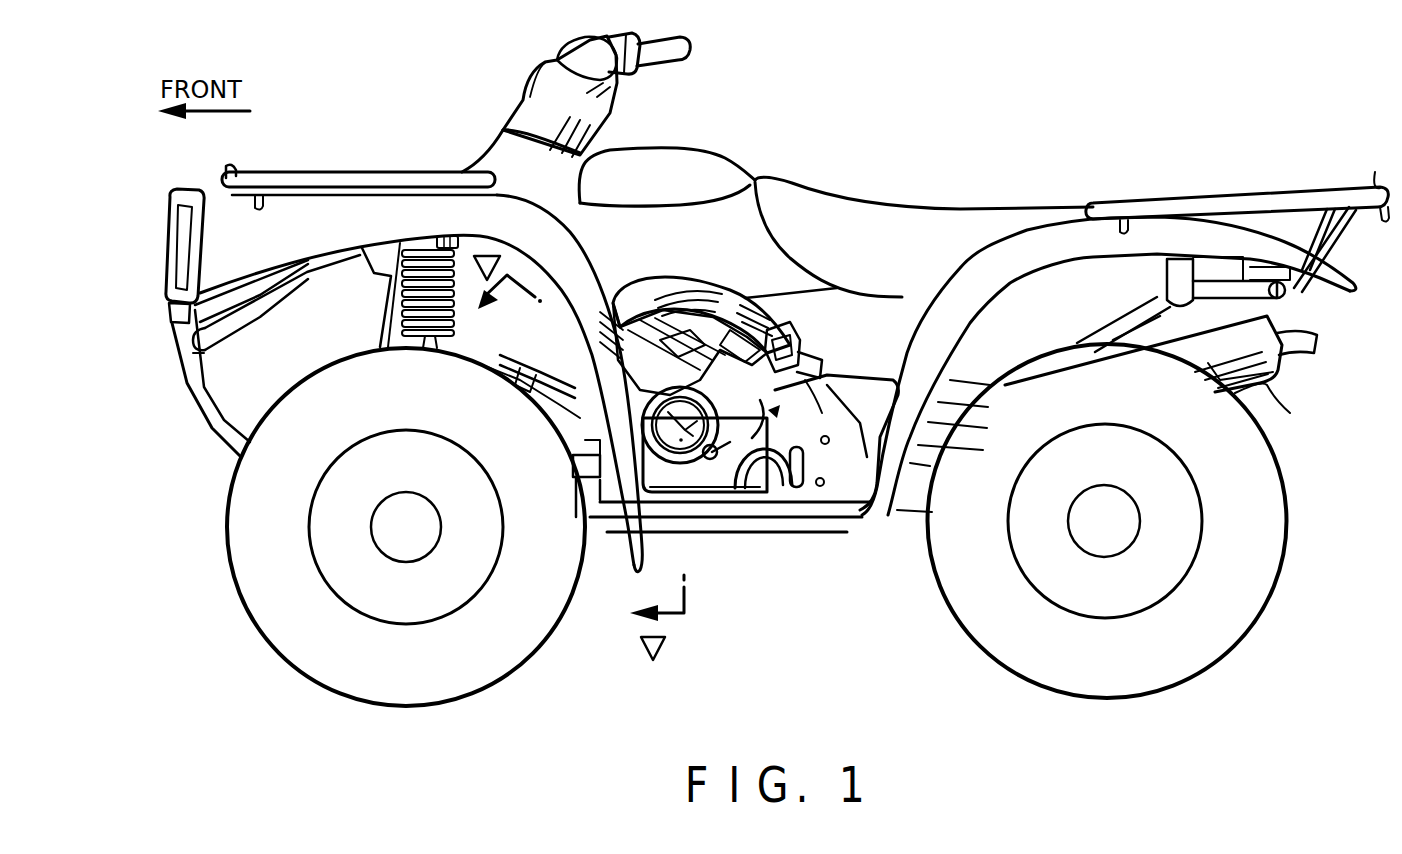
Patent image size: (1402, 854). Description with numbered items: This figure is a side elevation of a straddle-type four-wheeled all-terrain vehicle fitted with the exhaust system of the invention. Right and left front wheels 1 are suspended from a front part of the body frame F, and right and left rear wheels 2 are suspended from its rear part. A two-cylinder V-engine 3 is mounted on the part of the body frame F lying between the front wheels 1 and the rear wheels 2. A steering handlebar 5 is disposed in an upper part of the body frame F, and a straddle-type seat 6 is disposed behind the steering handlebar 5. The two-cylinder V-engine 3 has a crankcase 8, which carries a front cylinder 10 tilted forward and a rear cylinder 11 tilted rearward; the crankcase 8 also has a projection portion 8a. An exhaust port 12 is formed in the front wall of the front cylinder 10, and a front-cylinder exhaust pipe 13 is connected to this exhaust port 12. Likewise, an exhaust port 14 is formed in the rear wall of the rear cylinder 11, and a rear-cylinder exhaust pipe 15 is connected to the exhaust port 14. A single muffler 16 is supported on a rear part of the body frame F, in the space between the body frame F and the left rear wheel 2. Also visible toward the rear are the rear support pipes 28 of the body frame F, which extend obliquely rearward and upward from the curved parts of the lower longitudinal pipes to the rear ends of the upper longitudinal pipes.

The front wheels 1 is at (267, 611).
The rear wheels 2 is at (1237, 613).
The two-cylinder V-engine 3 is at (813, 440).
The steering handlebar 5 is at (597, 110).
The straddle-type seat 6 is at (937, 198).
The crankcase 8 is at (637, 412).
The projection portion 8a is at (705, 440).
The front cylinder 10 is at (615, 327).
The rear cylinder 11 is at (747, 440).
The exhaust port 12 is at (553, 363).
The front-cylinder exhaust pipe 13 is at (682, 293).
The exhaust port 14 is at (793, 350).
The rear-cylinder exhaust pipe 15 is at (827, 370).
The muffler 16 is at (1170, 375).
The rear support pipes 28 is at (1120, 328).
The body frame F is at (1147, 255).